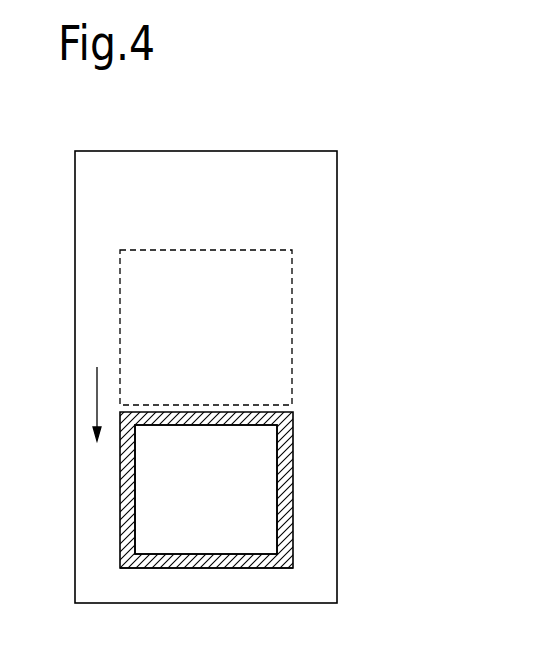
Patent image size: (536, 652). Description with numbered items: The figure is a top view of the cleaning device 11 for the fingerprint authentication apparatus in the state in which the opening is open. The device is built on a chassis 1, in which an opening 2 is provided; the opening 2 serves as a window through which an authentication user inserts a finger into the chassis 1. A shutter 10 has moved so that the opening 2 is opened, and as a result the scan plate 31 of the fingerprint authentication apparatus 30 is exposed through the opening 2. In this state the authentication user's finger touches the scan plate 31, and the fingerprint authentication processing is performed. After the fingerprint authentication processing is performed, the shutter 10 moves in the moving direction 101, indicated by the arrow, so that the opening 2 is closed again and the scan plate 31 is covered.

The chassis 1 is at (248, 149).
The opening 2 is at (200, 568).
The shutter 10 is at (292, 347).
The cleaning device for the fingerprint authentication apparatus 11 is at (388, 92).
The fingerprint authentication apparatus 30 is at (292, 437).
The scan plate 31 is at (258, 513).
The moving direction 101 is at (97, 410).